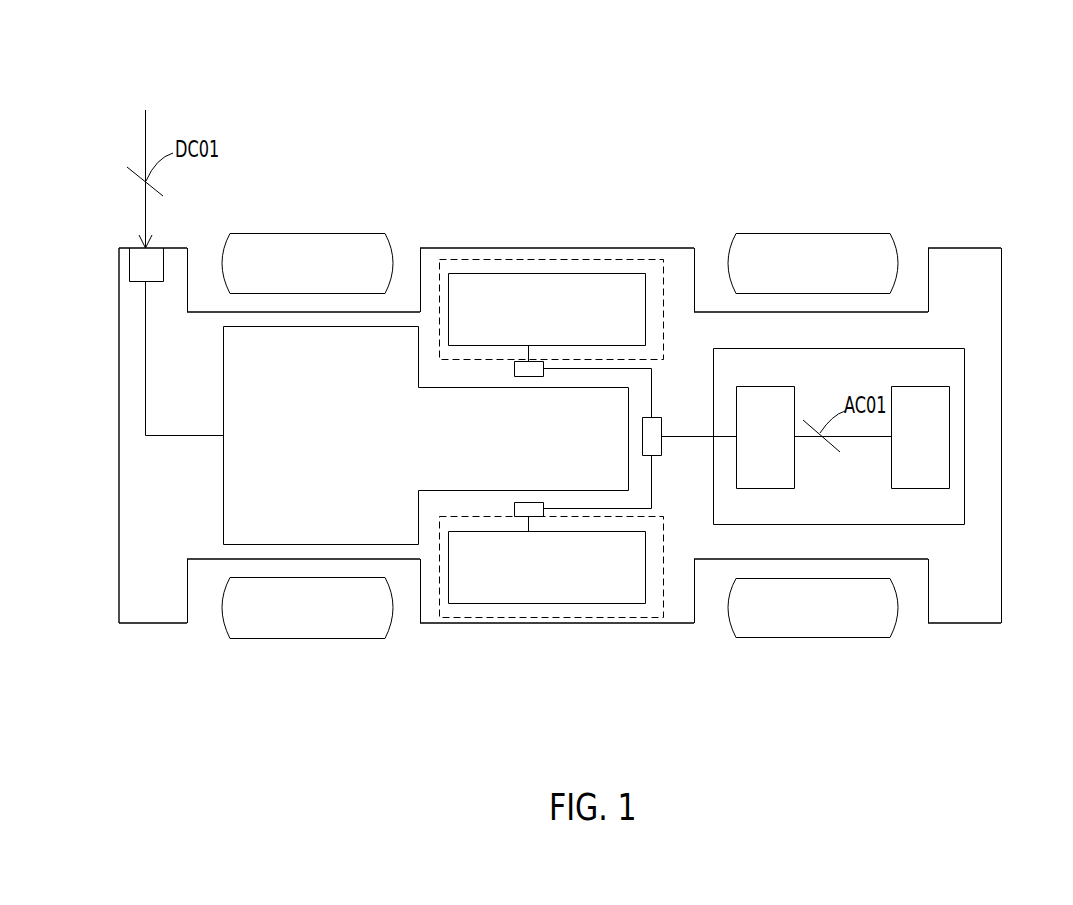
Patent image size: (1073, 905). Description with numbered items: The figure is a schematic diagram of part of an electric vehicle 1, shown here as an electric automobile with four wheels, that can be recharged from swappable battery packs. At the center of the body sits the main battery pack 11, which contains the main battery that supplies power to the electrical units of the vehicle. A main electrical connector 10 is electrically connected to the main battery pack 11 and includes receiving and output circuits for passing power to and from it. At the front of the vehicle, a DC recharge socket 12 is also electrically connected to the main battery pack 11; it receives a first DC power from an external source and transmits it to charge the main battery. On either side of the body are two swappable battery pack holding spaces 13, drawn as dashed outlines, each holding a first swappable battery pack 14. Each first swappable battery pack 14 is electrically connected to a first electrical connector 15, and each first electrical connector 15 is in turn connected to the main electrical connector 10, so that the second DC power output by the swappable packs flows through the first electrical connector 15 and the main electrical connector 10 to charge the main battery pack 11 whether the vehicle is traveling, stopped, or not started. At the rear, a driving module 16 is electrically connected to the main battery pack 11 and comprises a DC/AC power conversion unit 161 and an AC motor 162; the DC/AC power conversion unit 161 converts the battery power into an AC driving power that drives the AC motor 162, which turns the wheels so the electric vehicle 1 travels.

The electric vehicle 1 is at (938, 170).
The main electrical connector 10 is at (655, 457).
The main battery pack 11 is at (228, 494).
The DC recharge socket 12 is at (160, 250).
The swappable battery pack holding space 13 is at (607, 259).
The first swappable battery pack 14 is at (545, 272).
The first electrical connector 15 is at (514, 368).
The driving module 16 is at (964, 436).
The DC/AC power conversion unit 161 is at (763, 386).
The AC motor 162 is at (920, 386).